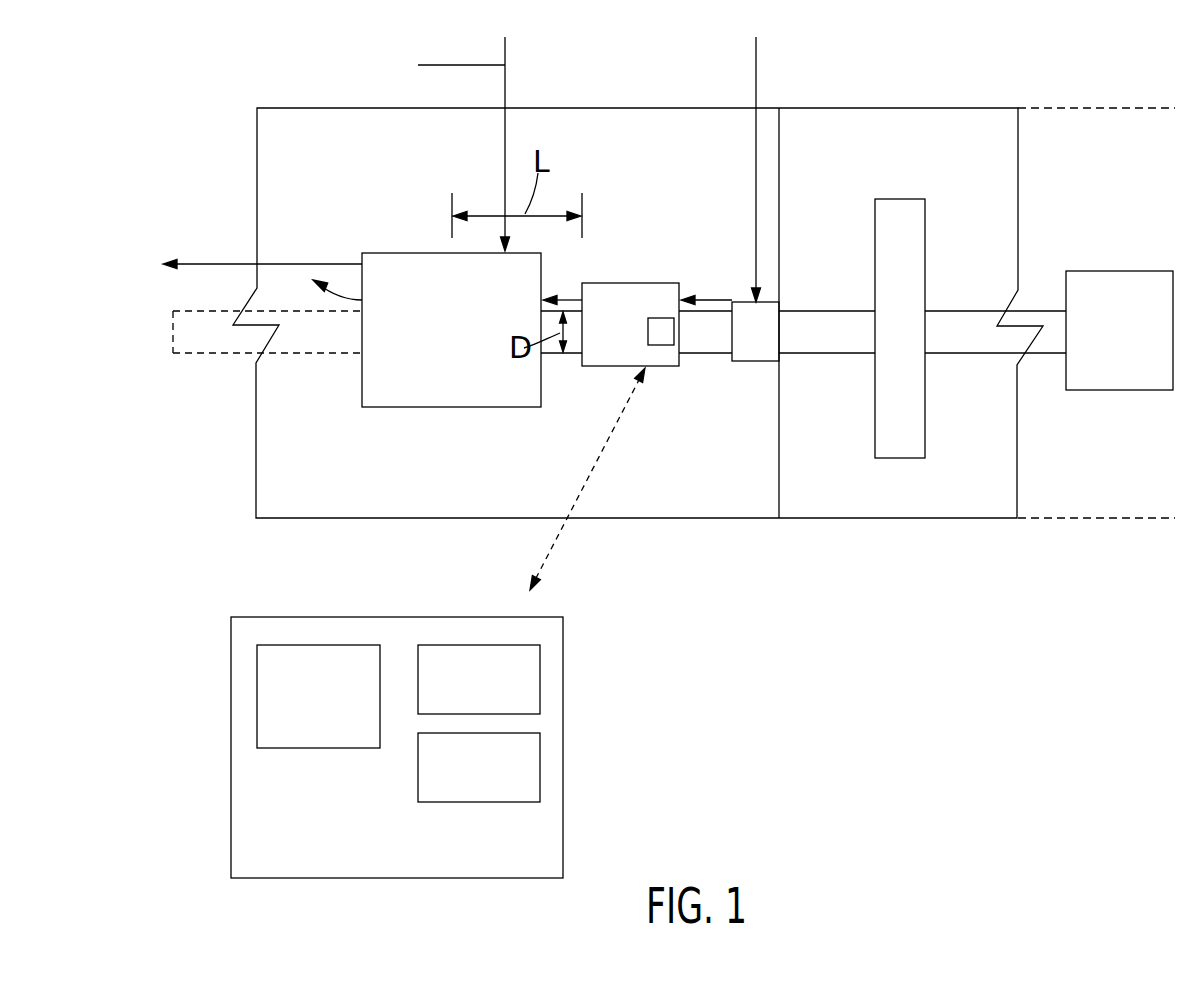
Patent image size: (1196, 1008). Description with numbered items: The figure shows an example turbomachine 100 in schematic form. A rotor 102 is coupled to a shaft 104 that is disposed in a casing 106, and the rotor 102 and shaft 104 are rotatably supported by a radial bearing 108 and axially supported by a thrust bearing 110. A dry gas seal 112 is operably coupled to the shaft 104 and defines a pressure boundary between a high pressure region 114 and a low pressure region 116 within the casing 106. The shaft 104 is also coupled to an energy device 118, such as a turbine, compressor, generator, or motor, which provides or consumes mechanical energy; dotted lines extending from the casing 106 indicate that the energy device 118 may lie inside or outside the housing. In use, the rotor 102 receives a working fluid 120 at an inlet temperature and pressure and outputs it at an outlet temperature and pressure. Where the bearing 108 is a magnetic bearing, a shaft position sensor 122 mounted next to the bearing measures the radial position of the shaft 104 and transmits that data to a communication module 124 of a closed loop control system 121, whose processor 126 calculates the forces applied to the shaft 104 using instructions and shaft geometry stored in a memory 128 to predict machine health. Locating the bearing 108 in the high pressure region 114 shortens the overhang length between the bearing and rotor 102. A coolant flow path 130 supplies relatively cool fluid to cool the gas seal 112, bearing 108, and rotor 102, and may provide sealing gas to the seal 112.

The turbomachine 100 is at (972, 82).
The rotor 102 is at (468, 347).
The shaft 104 is at (850, 347).
The casing 106 is at (321, 106).
The radial bearing 108 is at (634, 347).
The thrust bearing 110 is at (917, 347).
The dry gas seal 112 is at (768, 347).
The high pressure region 114 is at (640, 130).
The low pressure region 116 is at (900, 130).
The energy device 118 is at (1135, 347).
The working fluid 120 is at (507, 84).
The control system 121 is at (231, 766).
The shaft position sensor 122 is at (658, 318).
The communication module 124 is at (257, 701).
The processor 126 is at (543, 678).
The memory 128 is at (543, 768).
The coolant flow path 130 is at (758, 86).